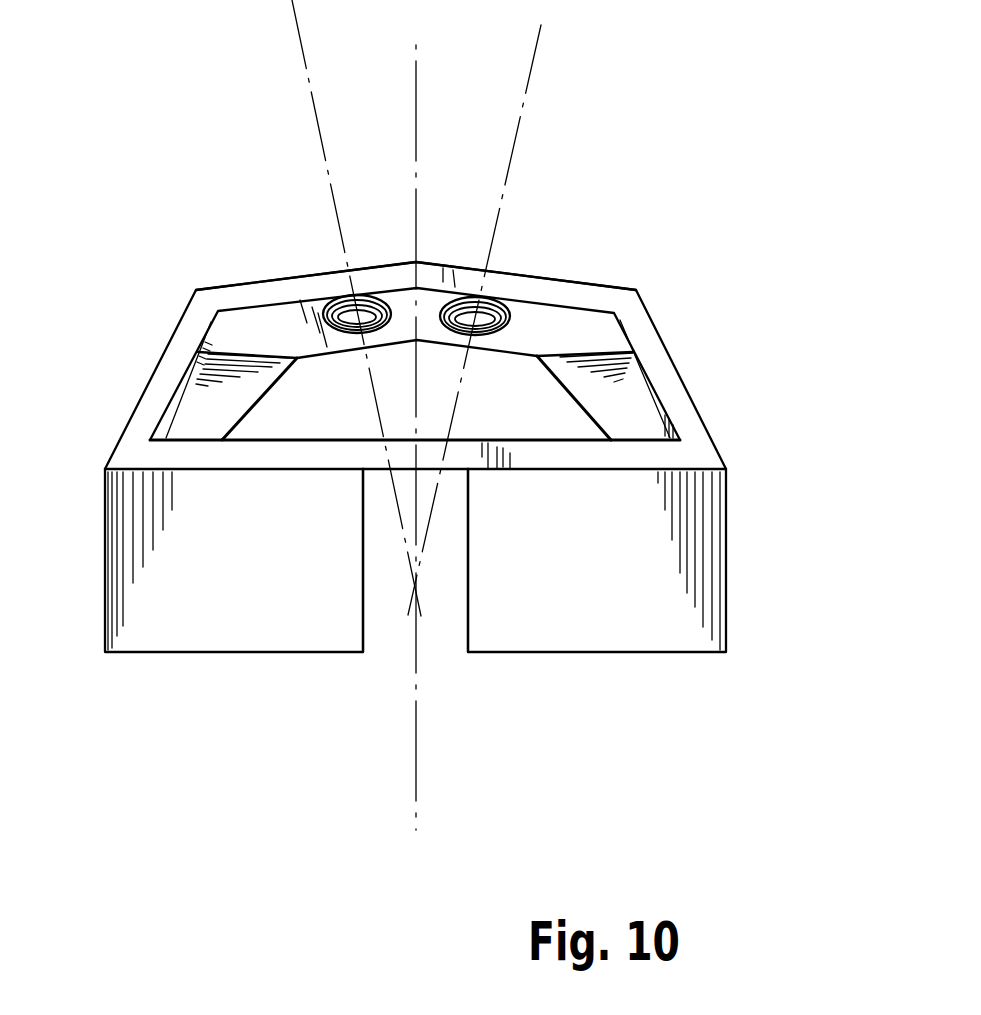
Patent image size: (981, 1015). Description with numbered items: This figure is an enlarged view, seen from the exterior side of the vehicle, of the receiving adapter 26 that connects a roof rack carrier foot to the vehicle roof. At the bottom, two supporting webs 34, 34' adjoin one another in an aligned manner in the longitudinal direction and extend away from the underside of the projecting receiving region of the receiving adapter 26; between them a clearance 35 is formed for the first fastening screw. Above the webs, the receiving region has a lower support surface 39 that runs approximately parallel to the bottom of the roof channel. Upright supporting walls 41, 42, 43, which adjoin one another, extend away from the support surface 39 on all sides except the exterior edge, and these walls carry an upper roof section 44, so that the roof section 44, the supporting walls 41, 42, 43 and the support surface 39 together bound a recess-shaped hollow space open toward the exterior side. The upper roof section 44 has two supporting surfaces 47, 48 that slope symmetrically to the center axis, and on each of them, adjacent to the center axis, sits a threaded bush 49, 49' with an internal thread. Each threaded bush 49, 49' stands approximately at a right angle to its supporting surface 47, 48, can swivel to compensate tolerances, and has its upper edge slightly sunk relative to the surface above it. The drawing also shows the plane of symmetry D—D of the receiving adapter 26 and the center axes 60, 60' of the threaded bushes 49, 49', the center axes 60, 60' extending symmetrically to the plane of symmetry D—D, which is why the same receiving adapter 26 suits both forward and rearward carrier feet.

The receiving adapter 26 is at (744, 526).
The supporting web 34 is at (191, 560).
The supporting web 34' is at (644, 560).
The clearance 35 is at (385, 632).
The lower support surface 39 is at (583, 434).
The supporting wall 41 is at (533, 356).
The supporting wall 42 is at (196, 362).
The supporting wall 43 is at (636, 370).
The upper roof section 44 is at (228, 264).
The supporting surface 47 is at (314, 260).
The supporting surface 48 is at (524, 260).
The threaded bush 49 is at (348, 362).
The threaded bush 49' is at (478, 364).
The center axis 60 is at (319, 308).
The center axis 60' is at (523, 320).
The plane of symmetry D is at (415, 441).